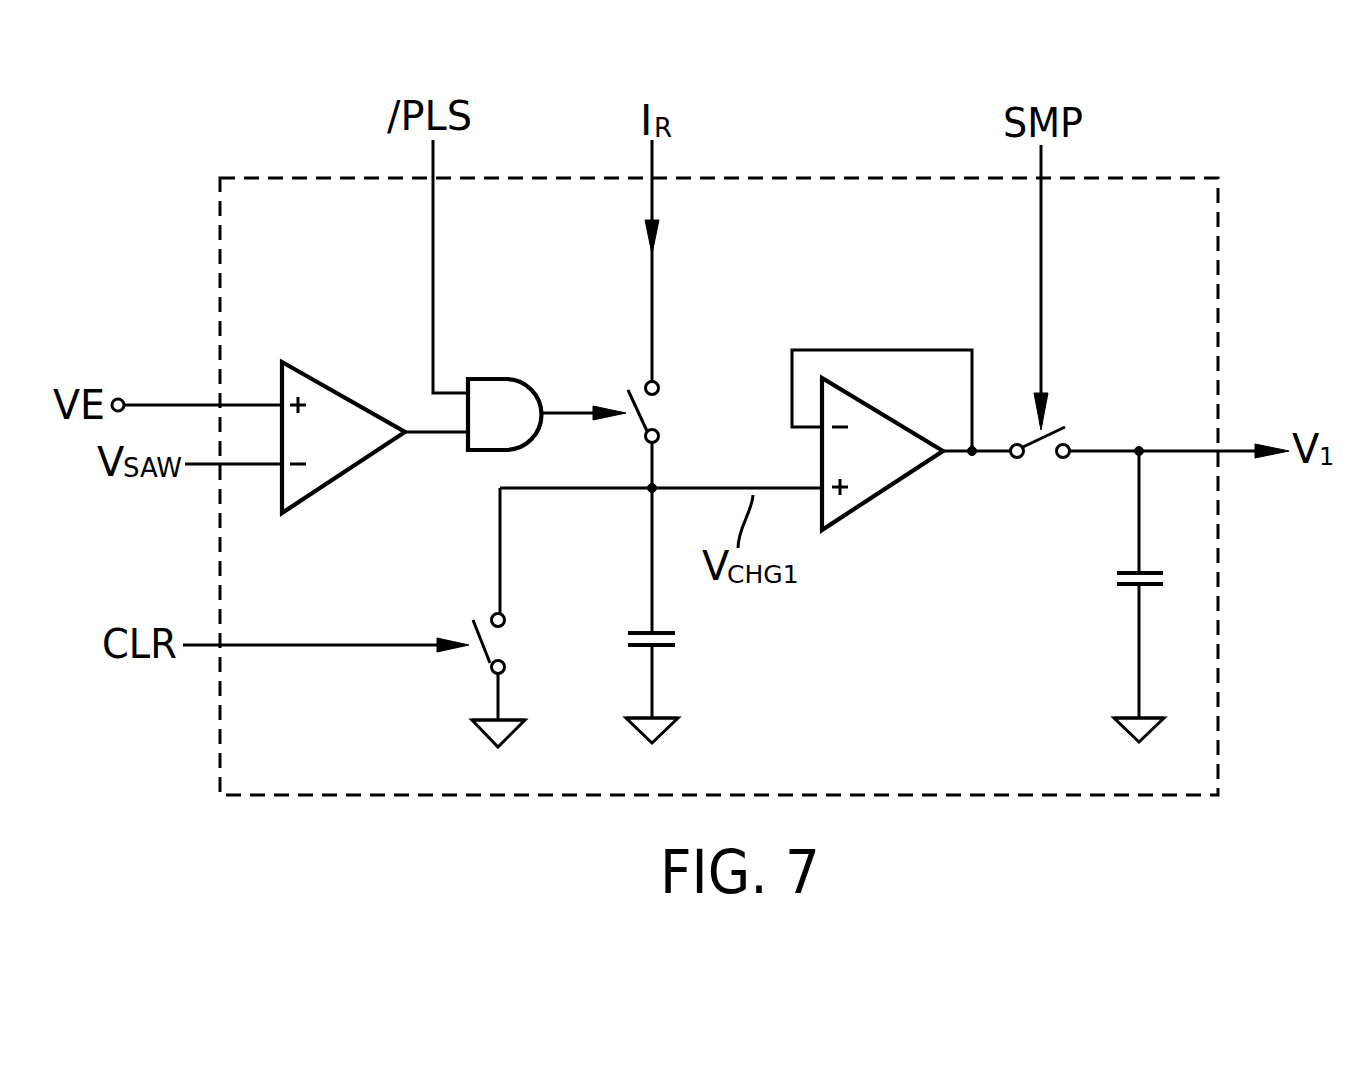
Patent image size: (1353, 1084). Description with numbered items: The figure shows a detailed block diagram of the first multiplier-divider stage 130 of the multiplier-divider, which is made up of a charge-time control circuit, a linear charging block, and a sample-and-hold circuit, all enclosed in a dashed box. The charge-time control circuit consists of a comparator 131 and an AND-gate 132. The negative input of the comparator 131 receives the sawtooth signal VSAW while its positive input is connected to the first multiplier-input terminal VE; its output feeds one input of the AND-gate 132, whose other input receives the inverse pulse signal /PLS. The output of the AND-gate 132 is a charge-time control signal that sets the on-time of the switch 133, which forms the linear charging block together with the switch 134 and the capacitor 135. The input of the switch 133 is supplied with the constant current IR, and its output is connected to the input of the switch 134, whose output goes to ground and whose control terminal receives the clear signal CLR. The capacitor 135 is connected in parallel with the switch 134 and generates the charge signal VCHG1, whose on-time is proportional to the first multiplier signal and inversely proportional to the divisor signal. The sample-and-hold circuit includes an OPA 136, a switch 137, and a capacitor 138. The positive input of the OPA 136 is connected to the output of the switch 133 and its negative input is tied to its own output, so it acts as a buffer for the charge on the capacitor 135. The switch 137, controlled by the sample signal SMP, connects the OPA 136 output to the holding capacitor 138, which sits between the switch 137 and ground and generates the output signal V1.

The first multiplier-divider stage 130 is at (1218, 237).
The comparator 131 is at (345, 382).
The AND-gate 132 is at (503, 365).
The switch 133 is at (668, 412).
The switch 134 is at (468, 620).
The capacitor 135 is at (680, 637).
The OPA 136 is at (865, 512).
The switch 137 is at (1043, 465).
The capacitor 138 is at (1170, 575).